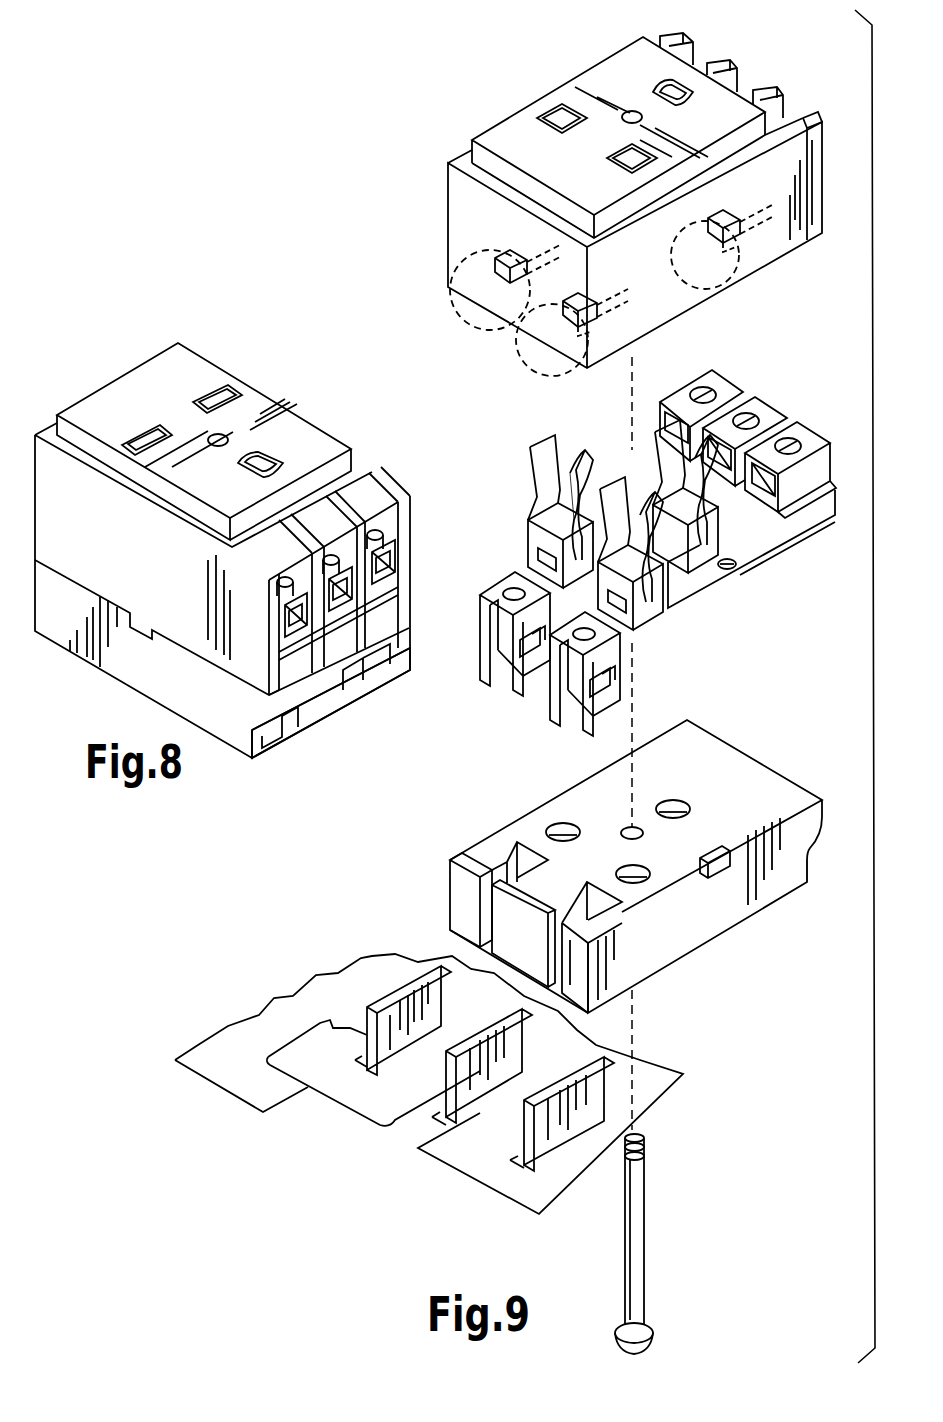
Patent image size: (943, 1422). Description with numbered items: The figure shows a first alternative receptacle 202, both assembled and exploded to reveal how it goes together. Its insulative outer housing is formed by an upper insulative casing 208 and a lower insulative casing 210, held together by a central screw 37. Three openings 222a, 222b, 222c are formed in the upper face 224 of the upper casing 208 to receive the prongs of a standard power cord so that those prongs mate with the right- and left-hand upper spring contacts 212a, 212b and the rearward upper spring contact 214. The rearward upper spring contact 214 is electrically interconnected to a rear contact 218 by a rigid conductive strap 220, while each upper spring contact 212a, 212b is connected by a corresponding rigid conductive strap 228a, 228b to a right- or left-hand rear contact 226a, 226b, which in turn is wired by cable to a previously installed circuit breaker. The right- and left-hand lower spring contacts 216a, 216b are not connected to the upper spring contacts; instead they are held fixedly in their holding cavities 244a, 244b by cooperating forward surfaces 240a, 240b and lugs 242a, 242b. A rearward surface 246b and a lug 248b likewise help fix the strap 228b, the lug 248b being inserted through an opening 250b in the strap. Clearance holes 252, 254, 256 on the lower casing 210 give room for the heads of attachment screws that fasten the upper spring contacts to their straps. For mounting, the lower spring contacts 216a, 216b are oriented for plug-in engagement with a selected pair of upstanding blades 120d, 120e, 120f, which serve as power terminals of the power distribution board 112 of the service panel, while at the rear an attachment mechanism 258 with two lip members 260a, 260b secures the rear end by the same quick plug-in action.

In FIG. 9, the central screw 37 is at (646, 1267).
In FIG. 9, the power distribution board 112 is at (463, 1083).
In FIG. 9, the upstanding blade 120d is at (376, 994).
In FIG. 9, the upstanding blade 120e is at (447, 1075).
In FIG. 9, the upstanding blade 120f is at (520, 1136).
In FIG. 8, the first alternative receptacle 202 is at (280, 397).
In FIG. 9, the first alternative receptacle 202 is at (755, 938).
In FIG. 9, the upper insulative casing 208 is at (822, 140).
In FIG. 9, the lower insulative casing 210 is at (599, 876).
In FIG. 9, the right-hand upper spring contact 212a is at (523, 540).
In FIG. 9, the left-hand upper spring contact 212b is at (673, 590).
In FIG. 9, the rearward upper spring contact 214 is at (633, 473).
In FIG. 9, the right-hand lower spring contact 216a is at (485, 638).
In FIG. 9, the left-hand lower spring contact 216b is at (553, 690).
In FIG. 9, the rear contact 218 is at (764, 417).
In FIG. 9, the rigid conductive strap 220 is at (767, 570).
In FIG. 9, the opening 222a is at (566, 98).
In FIG. 9, the opening 222b is at (628, 160).
In FIG. 9, the opening 222c is at (650, 84).
In FIG. 9, the upper face 224 is at (513, 132).
In FIG. 9, the right-hand rear contact 226a is at (735, 376).
In FIG. 9, the left-hand rear contact 226b is at (822, 430).
In FIG. 9, the rigid conductive strap 228a is at (600, 527).
In FIG. 9, the rigid conductive strap 228b is at (763, 547).
In FIG. 9, the forward surface 240a is at (496, 262).
In FIG. 9, the forward surface 240b is at (548, 320).
In FIG. 9, the lug 242a is at (515, 318).
In FIG. 9, the lug 242b is at (572, 338).
In FIG. 9, the holding cavity 244a is at (507, 863).
In FIG. 9, the holding cavity 244b is at (573, 903).
In FIG. 9, the rearward surface 246b is at (708, 232).
In FIG. 9, the lug 248b is at (750, 282).
In FIG. 9, the opening 250b is at (727, 571).
In FIG. 9, the clearance hole 252 is at (560, 823).
In FIG. 9, the clearance hole 254 is at (462, 893).
In FIG. 8, the clearance hole 256 is at (395, 638).
In FIG. 9, the clearance hole 256 is at (673, 800).
In FIG. 8, the attachment mechanism 258 is at (347, 730).
In FIG. 8, the lip member 260a is at (278, 725).
In FIG. 8, the lip member 260b is at (370, 678).